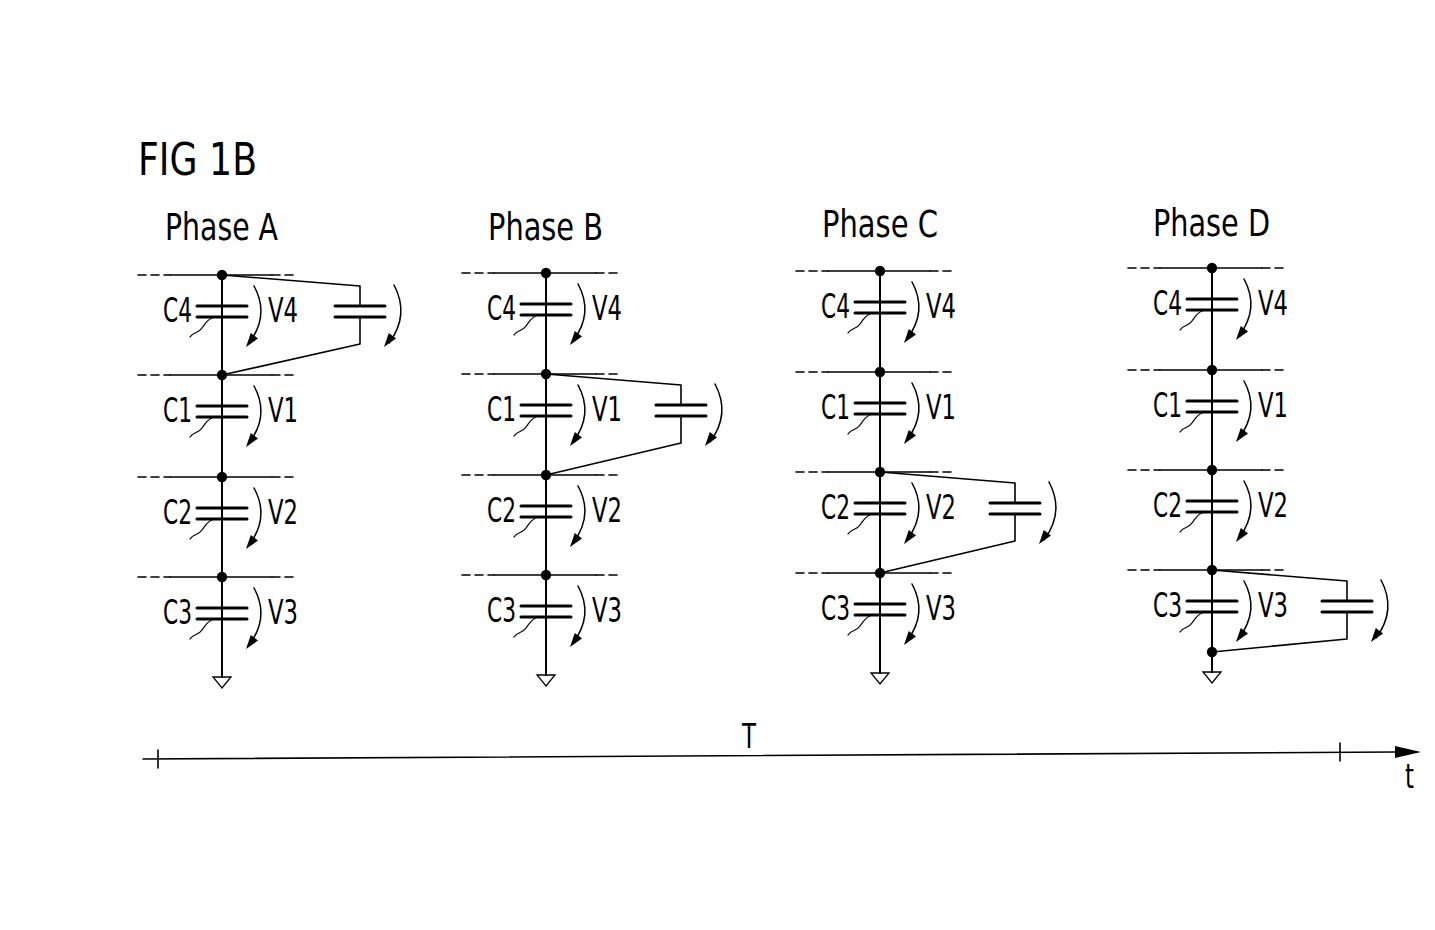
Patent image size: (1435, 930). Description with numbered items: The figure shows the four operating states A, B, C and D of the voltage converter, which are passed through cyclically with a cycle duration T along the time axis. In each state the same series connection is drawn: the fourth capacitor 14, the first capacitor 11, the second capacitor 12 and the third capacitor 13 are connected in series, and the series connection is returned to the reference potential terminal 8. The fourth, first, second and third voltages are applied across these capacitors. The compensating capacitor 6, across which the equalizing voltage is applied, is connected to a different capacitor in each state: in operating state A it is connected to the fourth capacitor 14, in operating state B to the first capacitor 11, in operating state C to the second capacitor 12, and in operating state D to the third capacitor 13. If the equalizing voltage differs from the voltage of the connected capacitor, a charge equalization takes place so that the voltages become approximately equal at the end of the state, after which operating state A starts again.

The compensating capacitor 6 is at (363, 300).
The reference potential terminal 8 is at (219, 684).
The first capacitor 11 is at (713, 457).
The second capacitor 12 is at (713, 557).
The third capacitor 13 is at (697, 646).
The fourth capacitor 14 is at (713, 356).